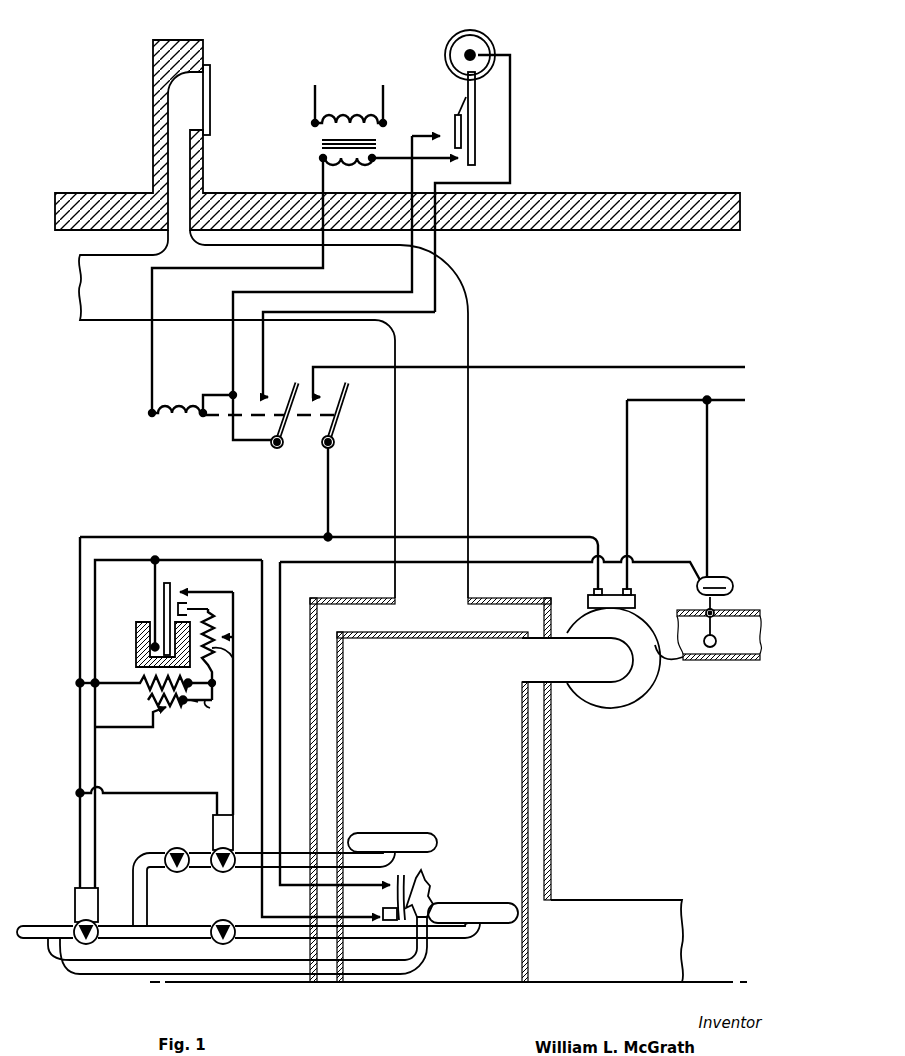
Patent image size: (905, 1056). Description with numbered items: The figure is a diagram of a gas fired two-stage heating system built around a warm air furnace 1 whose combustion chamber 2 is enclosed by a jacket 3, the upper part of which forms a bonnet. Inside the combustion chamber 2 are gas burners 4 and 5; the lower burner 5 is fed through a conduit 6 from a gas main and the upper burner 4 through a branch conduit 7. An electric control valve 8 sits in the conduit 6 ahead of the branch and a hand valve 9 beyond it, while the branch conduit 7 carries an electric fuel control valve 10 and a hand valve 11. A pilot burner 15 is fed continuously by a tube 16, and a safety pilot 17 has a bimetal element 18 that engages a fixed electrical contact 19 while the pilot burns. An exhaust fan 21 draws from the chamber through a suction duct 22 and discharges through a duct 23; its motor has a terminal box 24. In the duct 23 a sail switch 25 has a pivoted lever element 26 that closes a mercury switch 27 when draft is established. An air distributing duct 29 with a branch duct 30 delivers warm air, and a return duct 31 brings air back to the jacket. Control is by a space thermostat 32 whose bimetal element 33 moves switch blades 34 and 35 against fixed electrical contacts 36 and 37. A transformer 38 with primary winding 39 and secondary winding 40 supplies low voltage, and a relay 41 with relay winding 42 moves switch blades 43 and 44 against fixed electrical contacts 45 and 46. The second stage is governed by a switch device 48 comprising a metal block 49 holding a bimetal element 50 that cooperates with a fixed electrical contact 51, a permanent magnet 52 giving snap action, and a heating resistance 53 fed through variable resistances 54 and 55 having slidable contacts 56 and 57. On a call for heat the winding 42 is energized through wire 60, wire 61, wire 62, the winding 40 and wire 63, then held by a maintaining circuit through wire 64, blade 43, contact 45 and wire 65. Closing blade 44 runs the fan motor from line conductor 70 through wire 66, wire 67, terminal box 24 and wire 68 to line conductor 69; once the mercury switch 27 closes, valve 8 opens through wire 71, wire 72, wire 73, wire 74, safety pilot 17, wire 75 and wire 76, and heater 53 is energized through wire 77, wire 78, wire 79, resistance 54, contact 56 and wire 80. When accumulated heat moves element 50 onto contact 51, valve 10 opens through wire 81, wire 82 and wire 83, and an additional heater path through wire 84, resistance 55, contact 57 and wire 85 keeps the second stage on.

The warm air furnace 1 is at (496, 790).
The combustion chamber 2 is at (436, 778).
The jacket 3 is at (553, 740).
The gas burner 4 is at (436, 835).
The gas burner 5 is at (470, 903).
The conduit 6 is at (160, 925).
The branch conduit 7 is at (136, 866).
The electric control valve 8 is at (74, 896).
The hand valve 9 is at (226, 918).
The electric fuel control valve 10 is at (235, 830).
The hand valve 11 is at (180, 846).
The pilot burner 15 is at (428, 950).
The tube 16 is at (272, 948).
The safety pilot 17 is at (433, 872).
The bimetal element 18 is at (386, 904).
The fixed electrical contact 19 is at (402, 875).
The exhaust fan 21 is at (645, 702).
The suction duct 22 is at (558, 634).
The discharge duct 23 is at (735, 662).
The terminal box 24 is at (636, 598).
The sail switch 25 is at (727, 614).
The pivoted lever element 26 is at (718, 630).
The mercury switch 27 is at (718, 576).
The air distributing duct 29 is at (470, 450).
The branch duct 30 is at (168, 108).
The return duct 31 is at (615, 899).
The space thermostat 32 is at (416, 202).
The bimetal element 33 is at (447, 42).
The switch blade 34 is at (456, 112).
The switch blade 35 is at (476, 142).
The fixed electrical contact 36 is at (410, 130).
The fixed electrical contact 37 is at (474, 160).
The transformer 38 is at (317, 126).
The primary winding 39 is at (350, 110).
The secondary winding 40 is at (352, 164).
The relay 41 is at (447, 338).
The relay winding 42 is at (176, 402).
The switch blade 43 is at (290, 425).
The switch blade 44 is at (340, 425).
The fixed electrical contact 45 is at (274, 392).
The fixed electrical contact 46 is at (330, 396).
The switch device 48 is at (165, 612).
The metal block 49 is at (135, 634).
The bimetal element 50 is at (171, 584).
The fixed electrical contact 51 is at (206, 579).
The permanent magnet 52 is at (196, 603).
The electrical heating resistance 53 is at (140, 686).
The variable resistance 54 is at (182, 712).
The variable resistance 55 is at (216, 622).
The slidable contact 56 is at (168, 714).
The slidable contact 57 is at (234, 657).
The wire 60 is at (352, 291).
The wire 61 is at (210, 393).
The wire 62 is at (203, 272).
The wire 63 is at (433, 170).
The wire 64 is at (233, 432).
The wire 65 is at (437, 256).
The wire 66 is at (330, 500).
The wire 67 is at (500, 537).
The wire 68 is at (628, 472).
The line conductor 69 is at (727, 405).
The line conductor 70 is at (695, 365).
The wire 71 is at (78, 652).
The wire 72 is at (98, 770).
The wire 73 is at (93, 600).
The wire 74 is at (262, 718).
The wire 75 is at (283, 675).
The wire 76 is at (709, 500).
The wire 77 is at (124, 682).
The wire 78 is at (212, 703).
The wire 79 is at (197, 702).
The wire 80 is at (140, 728).
The wire 81 is at (235, 705).
The wire 82 is at (239, 632).
The wire 83 is at (153, 576).
The wire 84 is at (211, 672).
The wire 85 is at (234, 637).